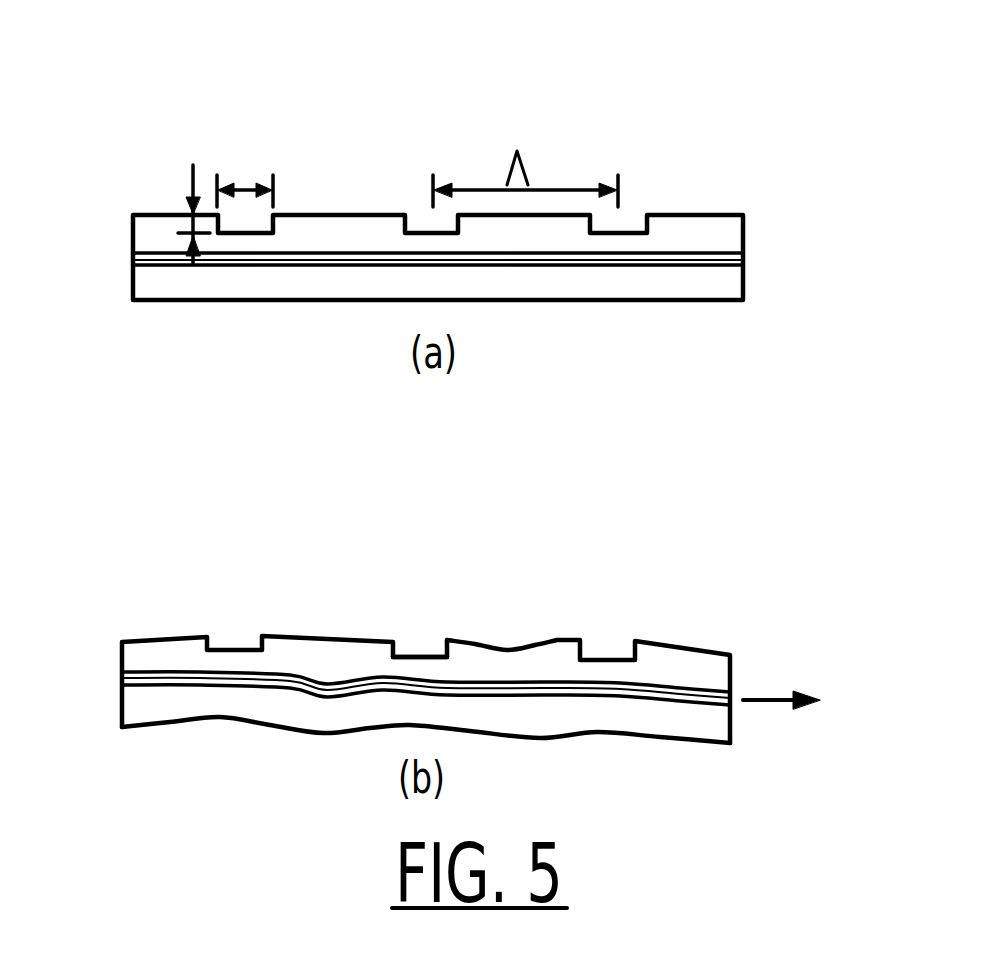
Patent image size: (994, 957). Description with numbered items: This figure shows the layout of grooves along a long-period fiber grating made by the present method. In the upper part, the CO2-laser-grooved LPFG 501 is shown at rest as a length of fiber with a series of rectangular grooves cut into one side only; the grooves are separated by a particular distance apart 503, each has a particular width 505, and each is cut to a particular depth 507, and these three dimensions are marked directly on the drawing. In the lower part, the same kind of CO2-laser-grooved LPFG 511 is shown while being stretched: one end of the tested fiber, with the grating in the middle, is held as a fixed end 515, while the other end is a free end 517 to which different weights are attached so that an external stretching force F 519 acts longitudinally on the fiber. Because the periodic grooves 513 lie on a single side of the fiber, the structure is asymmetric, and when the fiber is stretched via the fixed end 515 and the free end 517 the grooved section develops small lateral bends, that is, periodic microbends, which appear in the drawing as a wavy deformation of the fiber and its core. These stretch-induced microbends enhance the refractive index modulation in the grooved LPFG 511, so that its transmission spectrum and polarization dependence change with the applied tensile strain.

The CO2-laser-grooved LPFG 501 is at (743, 258).
The groove distance 503 is at (533, 163).
The groove width 505 is at (262, 152).
The groove depth 507 is at (163, 178).
The CO2-laser-grooved LPFG 511 is at (122, 678).
The periodic grooves 513 is at (412, 655).
The fixed end 515 is at (195, 782).
The free end 517 is at (735, 793).
The external stretching force F 519 is at (793, 665).